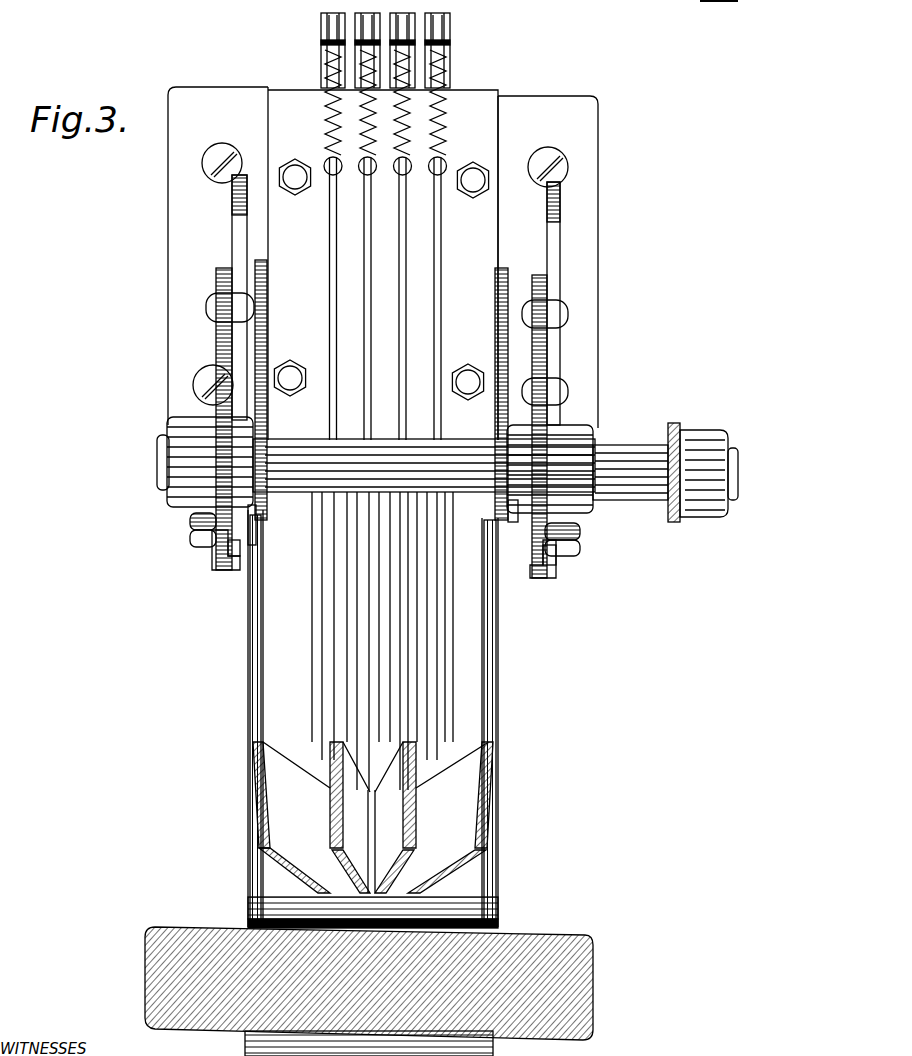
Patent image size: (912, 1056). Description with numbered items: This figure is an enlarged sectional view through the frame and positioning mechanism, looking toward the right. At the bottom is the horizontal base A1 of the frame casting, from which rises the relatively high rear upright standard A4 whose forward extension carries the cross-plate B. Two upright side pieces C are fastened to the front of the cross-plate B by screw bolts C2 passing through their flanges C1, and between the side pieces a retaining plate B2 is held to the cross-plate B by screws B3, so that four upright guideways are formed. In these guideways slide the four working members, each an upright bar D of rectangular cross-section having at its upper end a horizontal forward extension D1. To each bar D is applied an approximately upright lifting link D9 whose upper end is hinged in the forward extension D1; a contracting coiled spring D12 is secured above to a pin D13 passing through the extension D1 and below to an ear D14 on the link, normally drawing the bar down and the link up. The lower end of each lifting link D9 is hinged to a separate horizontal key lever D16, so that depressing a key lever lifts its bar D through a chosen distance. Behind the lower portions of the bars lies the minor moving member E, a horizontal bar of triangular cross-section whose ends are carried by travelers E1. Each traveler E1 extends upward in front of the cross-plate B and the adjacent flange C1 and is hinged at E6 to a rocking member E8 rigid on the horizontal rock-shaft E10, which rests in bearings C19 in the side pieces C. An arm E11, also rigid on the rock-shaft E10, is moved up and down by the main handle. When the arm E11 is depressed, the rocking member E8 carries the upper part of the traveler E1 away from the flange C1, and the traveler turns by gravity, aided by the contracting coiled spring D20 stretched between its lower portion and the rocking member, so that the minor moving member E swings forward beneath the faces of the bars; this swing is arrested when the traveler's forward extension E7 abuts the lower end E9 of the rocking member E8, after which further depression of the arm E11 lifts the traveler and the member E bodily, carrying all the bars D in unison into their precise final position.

The cross-plate B is at (185, 88).
The retaining plate B2 is at (485, 100).
The flange C1 is at (580, 105).
The screw bolts C2 is at (562, 166).
The screws B3 is at (295, 197).
The traveler E1 is at (232, 212).
The rocking member E8 is at (220, 272).
The hinge E6 is at (208, 308).
The side pieces C is at (266, 322).
The forward extension D1 is at (448, 62).
The pin D13 is at (335, 32).
The contracting coiled spring D12 is at (335, 100).
The ear D14 is at (439, 198).
The lifting link D9 is at (368, 252).
The bar D is at (437, 578).
The rock-shaft E10 is at (617, 448).
The arm E11 is at (678, 426).
The contracting coiled spring D20 is at (196, 528).
The forward extension E7 is at (214, 567).
The lower end E9 is at (232, 560).
The minor moving member E is at (516, 522).
The bearings C19 is at (248, 514).
The upright standard A4 is at (483, 728).
The key lever D16 is at (268, 793).
The horizontal base A1 is at (200, 936).